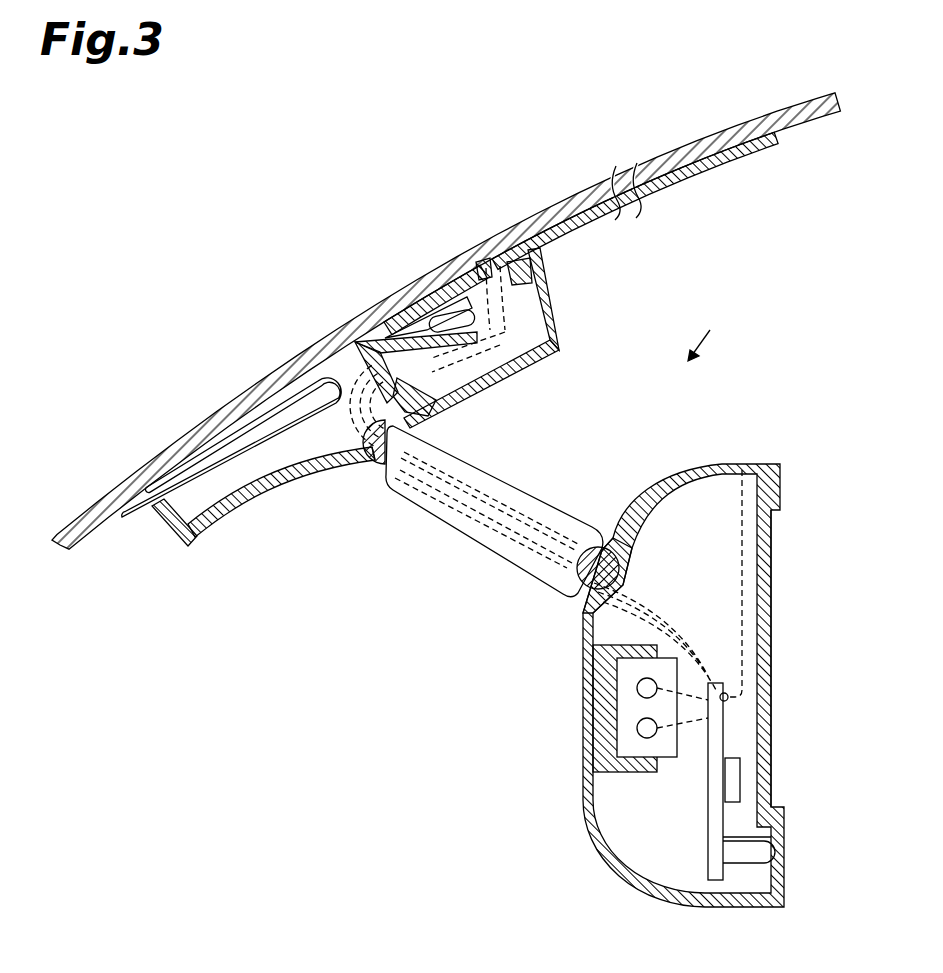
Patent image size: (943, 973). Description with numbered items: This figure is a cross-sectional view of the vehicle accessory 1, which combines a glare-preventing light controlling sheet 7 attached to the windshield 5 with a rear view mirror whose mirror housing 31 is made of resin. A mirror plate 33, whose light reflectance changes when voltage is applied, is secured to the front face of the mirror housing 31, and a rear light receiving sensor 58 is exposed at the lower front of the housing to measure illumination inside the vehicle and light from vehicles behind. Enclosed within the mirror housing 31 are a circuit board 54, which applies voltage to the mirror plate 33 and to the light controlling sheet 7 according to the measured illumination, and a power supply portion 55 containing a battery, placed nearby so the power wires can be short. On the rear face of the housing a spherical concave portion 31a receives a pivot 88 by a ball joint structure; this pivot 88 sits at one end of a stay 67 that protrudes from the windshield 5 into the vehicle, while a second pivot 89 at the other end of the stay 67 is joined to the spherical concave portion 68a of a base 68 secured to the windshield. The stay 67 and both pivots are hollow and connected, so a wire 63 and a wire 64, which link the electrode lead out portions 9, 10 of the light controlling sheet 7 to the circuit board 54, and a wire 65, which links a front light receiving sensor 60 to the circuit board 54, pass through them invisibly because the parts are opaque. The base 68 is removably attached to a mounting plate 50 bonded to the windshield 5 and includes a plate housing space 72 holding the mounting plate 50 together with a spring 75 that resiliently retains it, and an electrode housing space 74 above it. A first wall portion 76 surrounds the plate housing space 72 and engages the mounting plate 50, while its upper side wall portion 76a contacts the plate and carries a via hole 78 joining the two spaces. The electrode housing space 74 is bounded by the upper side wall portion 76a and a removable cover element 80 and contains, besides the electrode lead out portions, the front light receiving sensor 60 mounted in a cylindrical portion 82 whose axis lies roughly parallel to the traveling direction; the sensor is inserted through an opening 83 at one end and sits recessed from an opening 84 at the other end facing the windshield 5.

The vehicle accessory 1 is at (736, 323).
The windshield 5 is at (745, 133).
The light controlling sheet 7 is at (735, 158).
The electrode lead out portion 9 is at (497, 225).
The electrode lead out portion 10 is at (486, 262).
The mirror housing 31 is at (664, 654).
The spherical concave portion 31a is at (590, 605).
The mirror plate 33 is at (771, 640).
The mounting plate 50 is at (390, 324).
The circuit board 54 is at (727, 736).
The power supply portion 55 is at (625, 707).
The rear light receiving sensor 58 is at (775, 852).
The front light receiving sensor 60 is at (455, 318).
The wire 63 is at (530, 530).
The wire 64 is at (500, 498).
The wire 65 is at (495, 540).
The stay 67 is at (528, 522).
The base 68 is at (246, 533).
The spherical concave portion 68a is at (372, 456).
The plate housing space 72 is at (187, 503).
The electrode housing space 74 is at (533, 297).
The spring 75 is at (258, 490).
The first wall portion 76 is at (170, 530).
The upper side wall portion 76a is at (372, 345).
The via hole 78 is at (418, 392).
The cover element 80 is at (558, 325).
The cylindrical portion 82 is at (445, 345).
The opening 83 is at (522, 363).
The opening 84 is at (393, 312).
The pivot 88 is at (618, 556).
The pivot 89 is at (385, 466).